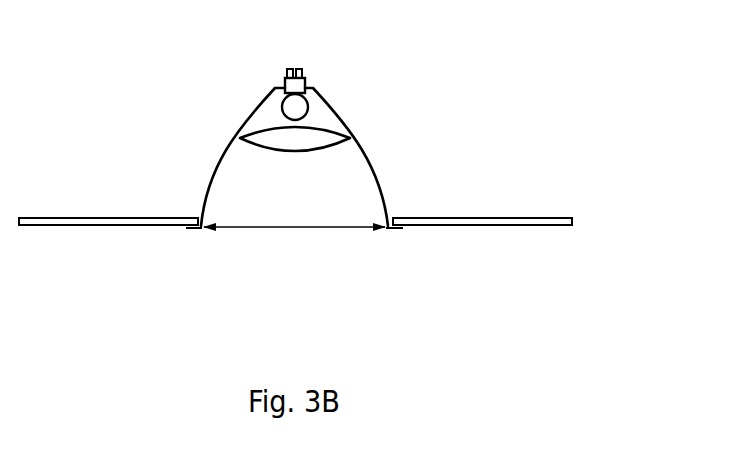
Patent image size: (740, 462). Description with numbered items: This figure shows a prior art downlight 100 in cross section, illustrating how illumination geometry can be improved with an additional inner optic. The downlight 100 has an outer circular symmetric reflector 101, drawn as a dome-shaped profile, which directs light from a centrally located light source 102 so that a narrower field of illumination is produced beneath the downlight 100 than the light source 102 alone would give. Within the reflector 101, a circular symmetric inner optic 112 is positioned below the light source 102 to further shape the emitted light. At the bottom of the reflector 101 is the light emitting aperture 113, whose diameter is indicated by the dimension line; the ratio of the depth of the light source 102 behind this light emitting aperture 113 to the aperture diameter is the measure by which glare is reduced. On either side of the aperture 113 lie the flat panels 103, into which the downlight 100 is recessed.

The downlight 100 is at (238, 69).
The outer circular symmetric reflector 101 is at (227, 148).
The light source 102 is at (297, 107).
The ceiling panel / mounting surface 103 is at (110, 207).
The inner optic 112 is at (320, 140).
The light emitting aperture 113 is at (294, 239).